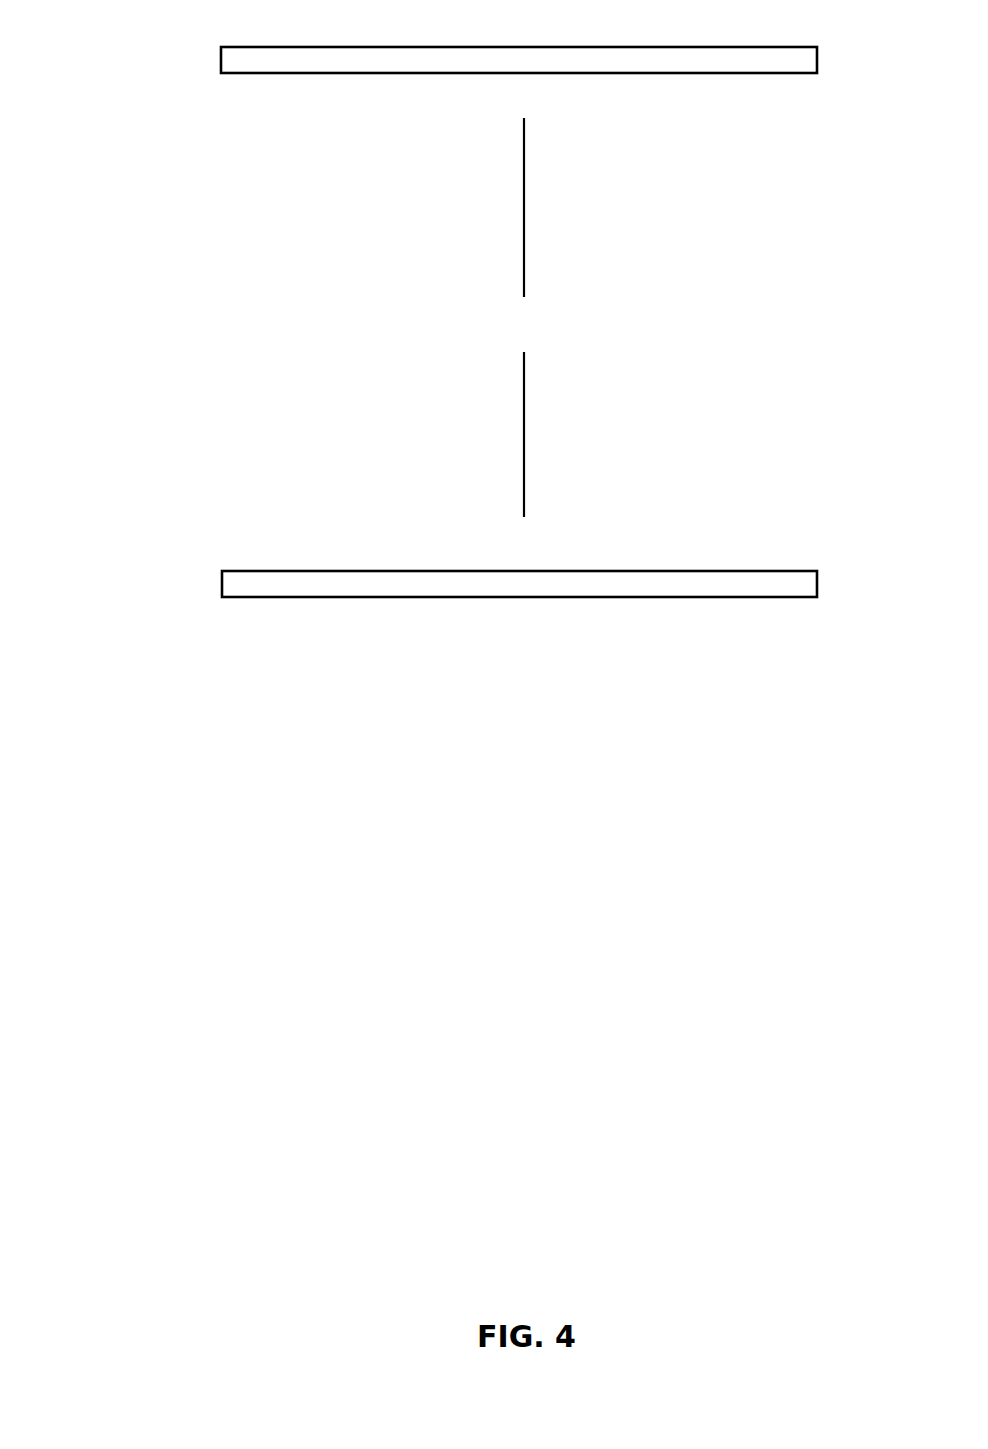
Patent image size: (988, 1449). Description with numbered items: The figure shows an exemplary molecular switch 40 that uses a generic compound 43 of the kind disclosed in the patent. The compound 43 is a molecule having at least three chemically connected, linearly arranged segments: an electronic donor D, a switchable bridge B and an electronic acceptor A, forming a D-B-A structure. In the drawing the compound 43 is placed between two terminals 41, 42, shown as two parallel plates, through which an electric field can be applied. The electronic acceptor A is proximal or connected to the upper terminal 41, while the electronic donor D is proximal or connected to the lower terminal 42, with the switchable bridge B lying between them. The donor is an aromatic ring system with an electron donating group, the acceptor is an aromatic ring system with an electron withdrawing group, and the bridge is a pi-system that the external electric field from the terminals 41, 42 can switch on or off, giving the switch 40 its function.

The molecular switch 40 is at (146, 70).
The terminal 41 is at (817, 56).
The terminal 42 is at (817, 580).
The generic compound 43 is at (565, 102).